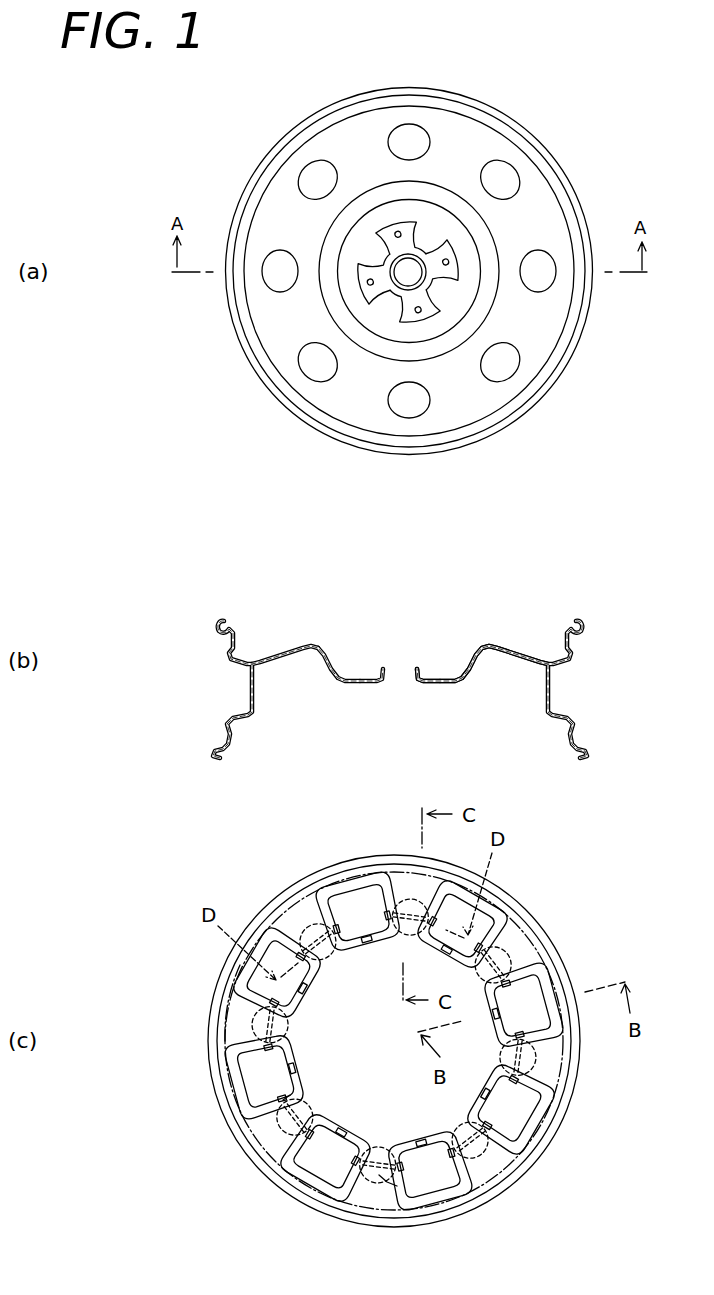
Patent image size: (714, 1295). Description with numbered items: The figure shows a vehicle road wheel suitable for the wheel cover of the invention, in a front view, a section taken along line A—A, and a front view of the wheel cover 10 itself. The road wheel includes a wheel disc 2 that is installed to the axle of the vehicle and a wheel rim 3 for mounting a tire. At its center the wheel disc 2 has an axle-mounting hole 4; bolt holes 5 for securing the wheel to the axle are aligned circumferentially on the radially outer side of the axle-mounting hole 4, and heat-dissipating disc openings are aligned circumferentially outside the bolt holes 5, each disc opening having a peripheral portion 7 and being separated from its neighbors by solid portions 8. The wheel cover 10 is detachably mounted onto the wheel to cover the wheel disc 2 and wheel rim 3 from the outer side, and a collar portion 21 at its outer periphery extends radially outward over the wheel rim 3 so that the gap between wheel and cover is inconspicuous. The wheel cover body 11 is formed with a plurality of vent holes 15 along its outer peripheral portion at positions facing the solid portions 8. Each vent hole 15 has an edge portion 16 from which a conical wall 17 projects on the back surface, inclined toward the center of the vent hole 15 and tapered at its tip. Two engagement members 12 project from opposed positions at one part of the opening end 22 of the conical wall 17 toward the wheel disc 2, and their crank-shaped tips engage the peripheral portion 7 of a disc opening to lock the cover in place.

The wheel disc 2 is at (352, 137).
The wheel rim 3 is at (562, 162).
The axle-mounting hole 4 is at (404, 278).
The bolt holes 5 is at (370, 283).
The peripheral portion 7 is at (424, 398).
The solid portions 8 is at (530, 325).
The wheel cover 10 is at (316, 868).
The wheel cover body 11 is at (497, 1170).
The engagement member 12 is at (277, 1055).
The vent hole 15 is at (425, 1177).
The edge portion 16 is at (393, 1187).
The conical wall 17 is at (457, 1180).
The collar portion 21 is at (533, 918).
The opening end 22 is at (287, 1097).